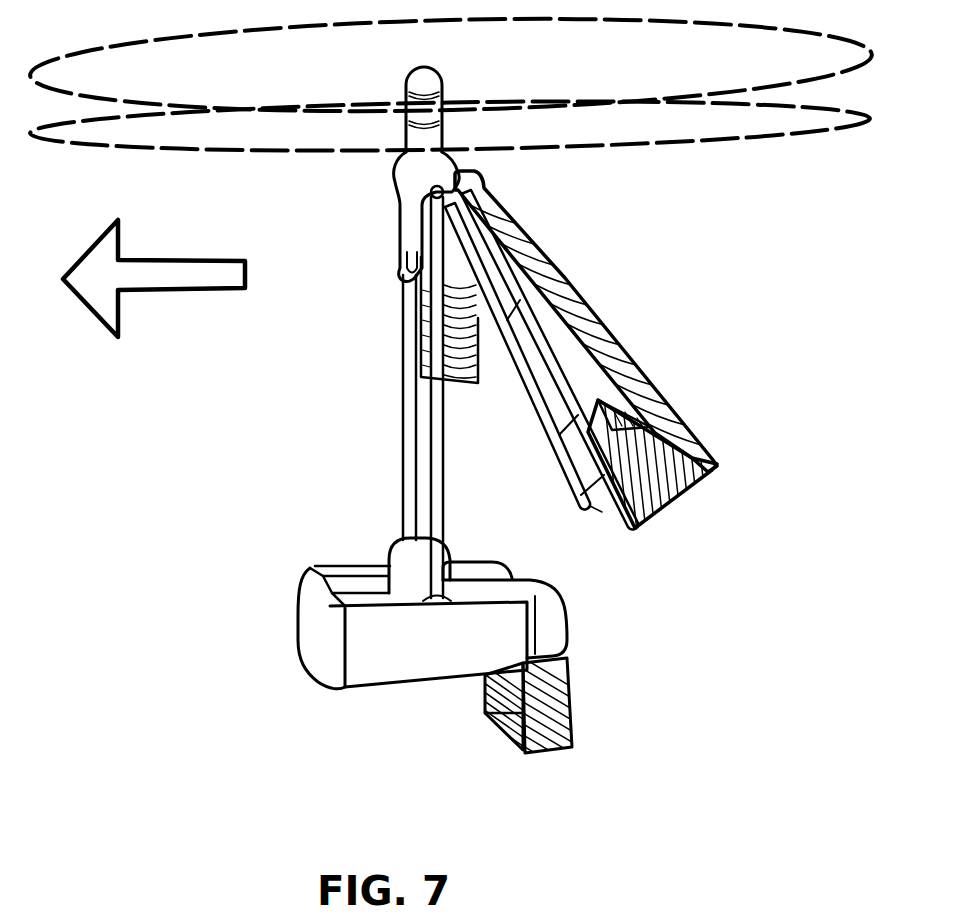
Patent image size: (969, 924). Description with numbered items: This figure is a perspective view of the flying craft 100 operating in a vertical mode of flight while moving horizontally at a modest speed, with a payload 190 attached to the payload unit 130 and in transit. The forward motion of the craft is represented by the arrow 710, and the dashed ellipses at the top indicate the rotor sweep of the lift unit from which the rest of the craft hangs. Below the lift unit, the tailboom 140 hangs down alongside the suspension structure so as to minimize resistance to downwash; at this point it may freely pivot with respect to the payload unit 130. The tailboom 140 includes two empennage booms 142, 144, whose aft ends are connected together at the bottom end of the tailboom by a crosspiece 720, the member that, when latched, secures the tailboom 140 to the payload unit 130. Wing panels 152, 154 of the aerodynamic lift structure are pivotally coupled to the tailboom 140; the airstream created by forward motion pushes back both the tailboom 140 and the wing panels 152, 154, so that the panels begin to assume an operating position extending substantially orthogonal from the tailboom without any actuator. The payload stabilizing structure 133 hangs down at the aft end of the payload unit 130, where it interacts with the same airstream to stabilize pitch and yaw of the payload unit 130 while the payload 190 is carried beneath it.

The flying craft 100 is at (145, 456).
The payload unit 130 is at (334, 545).
The payload stabilizing structure 133 is at (560, 770).
The tailboom 140 is at (716, 540).
The empennage boom 142 is at (573, 407).
The empennage boom 144 is at (562, 472).
The wing panel 152 is at (582, 280).
The wing panel 154 is at (478, 383).
The payload 190 is at (416, 693).
The arrow 710 is at (164, 258).
The crosspiece 720 is at (597, 520).